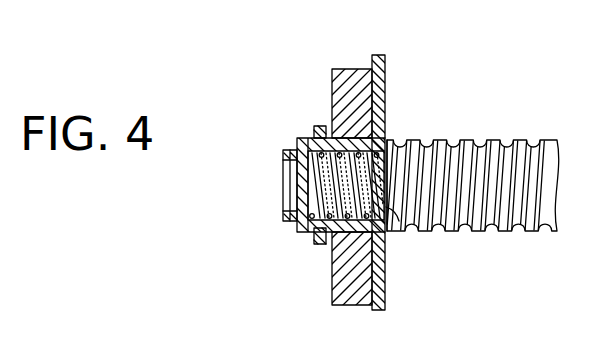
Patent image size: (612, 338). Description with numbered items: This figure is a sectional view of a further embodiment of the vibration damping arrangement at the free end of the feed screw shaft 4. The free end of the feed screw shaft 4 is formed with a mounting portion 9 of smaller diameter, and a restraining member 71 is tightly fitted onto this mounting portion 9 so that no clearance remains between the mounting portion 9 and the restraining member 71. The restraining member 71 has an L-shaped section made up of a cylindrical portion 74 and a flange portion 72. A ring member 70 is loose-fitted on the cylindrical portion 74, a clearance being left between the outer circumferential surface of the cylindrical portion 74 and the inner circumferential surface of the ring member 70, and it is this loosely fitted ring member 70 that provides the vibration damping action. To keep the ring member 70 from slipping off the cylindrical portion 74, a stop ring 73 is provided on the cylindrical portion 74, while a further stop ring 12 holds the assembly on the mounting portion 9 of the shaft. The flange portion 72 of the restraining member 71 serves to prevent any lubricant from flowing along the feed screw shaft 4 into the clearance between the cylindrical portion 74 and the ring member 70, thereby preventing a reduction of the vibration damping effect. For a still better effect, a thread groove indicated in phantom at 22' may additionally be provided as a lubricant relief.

The feed screw shaft 4 is at (545, 199).
The mounting portion 9 is at (407, 232).
The stop ring 12 is at (300, 232).
The thread groove 22' is at (273, 192).
The ring member 70 is at (343, 79).
The restraining member 71 is at (386, 130).
The flange portion 72 is at (385, 60).
The stop ring 73 is at (320, 245).
The cylindrical portion 74 is at (333, 110).